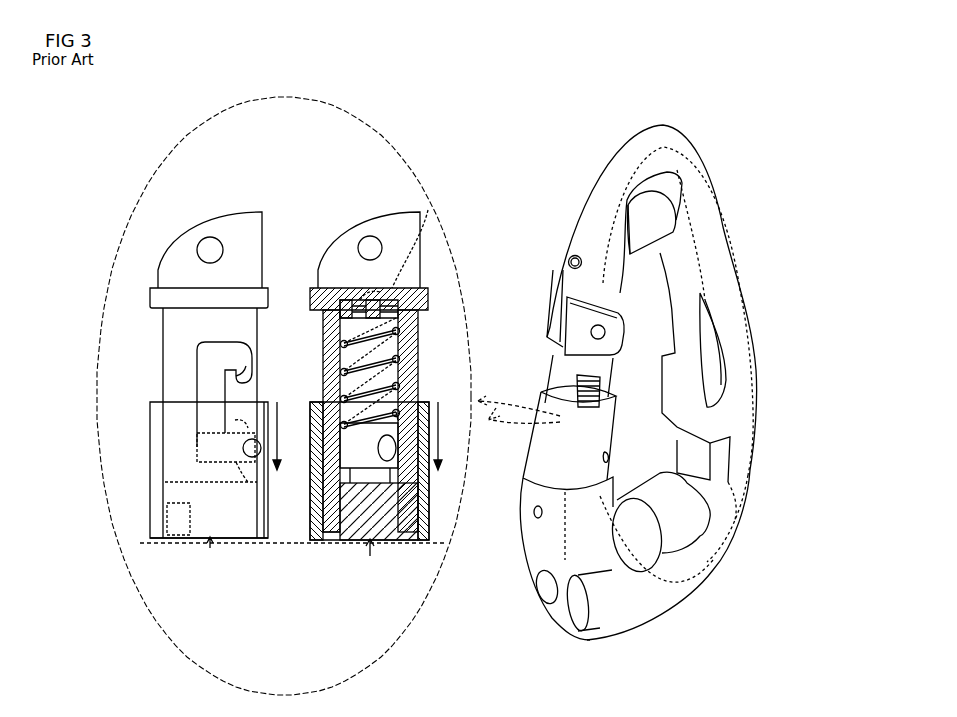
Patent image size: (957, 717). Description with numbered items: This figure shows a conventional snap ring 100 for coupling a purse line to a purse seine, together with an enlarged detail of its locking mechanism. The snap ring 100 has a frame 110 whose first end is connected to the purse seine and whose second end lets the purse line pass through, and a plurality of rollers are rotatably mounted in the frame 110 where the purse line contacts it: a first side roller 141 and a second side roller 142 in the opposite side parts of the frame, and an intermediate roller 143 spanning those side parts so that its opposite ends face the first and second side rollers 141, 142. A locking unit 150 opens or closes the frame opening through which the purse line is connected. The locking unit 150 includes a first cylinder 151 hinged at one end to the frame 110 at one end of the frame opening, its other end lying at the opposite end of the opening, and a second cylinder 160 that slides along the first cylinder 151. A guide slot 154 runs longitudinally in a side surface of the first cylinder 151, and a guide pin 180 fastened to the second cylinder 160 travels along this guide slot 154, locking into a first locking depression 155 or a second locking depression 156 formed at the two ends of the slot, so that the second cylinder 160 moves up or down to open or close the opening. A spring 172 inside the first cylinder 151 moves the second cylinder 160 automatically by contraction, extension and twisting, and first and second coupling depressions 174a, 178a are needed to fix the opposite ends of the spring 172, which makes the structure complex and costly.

The snap ring 100 is at (612, 134).
The frame 110 is at (717, 245).
The first side roller 141 is at (633, 580).
The second side roller 142 is at (740, 503).
The intermediate roller 143 is at (677, 540).
The locking unit 150 is at (298, 161).
The first cylinder 151 is at (163, 345).
The guide slot 154 is at (197, 392).
The first locking depression 155 is at (248, 377).
The second locking depression 156 is at (243, 542).
The second cylinder 160 is at (150, 448).
The spring 172 is at (410, 366).
The first coupling depression 174a is at (400, 413).
The second coupling depression 178a is at (428, 210).
The guide pin 180 is at (200, 450).